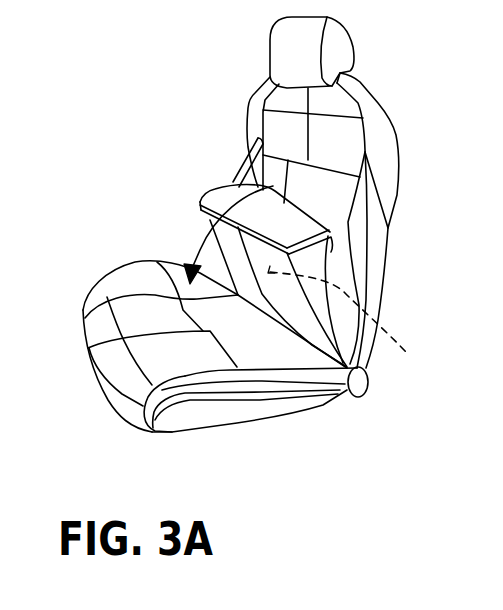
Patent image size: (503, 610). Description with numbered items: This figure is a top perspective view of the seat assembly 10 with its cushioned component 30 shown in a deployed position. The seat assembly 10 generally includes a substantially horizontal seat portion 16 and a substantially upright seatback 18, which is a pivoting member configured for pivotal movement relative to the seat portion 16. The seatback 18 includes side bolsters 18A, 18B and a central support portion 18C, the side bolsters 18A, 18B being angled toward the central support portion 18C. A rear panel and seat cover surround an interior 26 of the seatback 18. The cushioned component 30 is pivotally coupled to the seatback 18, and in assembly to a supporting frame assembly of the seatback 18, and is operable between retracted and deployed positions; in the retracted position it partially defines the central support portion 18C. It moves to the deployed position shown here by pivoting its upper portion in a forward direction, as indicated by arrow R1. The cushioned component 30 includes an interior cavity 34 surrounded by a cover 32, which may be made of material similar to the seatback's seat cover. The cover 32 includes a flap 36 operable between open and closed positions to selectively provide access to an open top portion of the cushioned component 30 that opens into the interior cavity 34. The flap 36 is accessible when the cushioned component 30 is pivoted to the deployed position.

The seat assembly 10 is at (257, 245).
The seat portion 16 is at (78, 351).
The seatback 18 is at (319, 213).
The side bolster 18A is at (247, 134).
The side bolster 18B is at (347, 245).
The central support portion 18C is at (326, 126).
The interior 26 is at (313, 185).
The cushioned component 30 is at (270, 283).
The cover 32 is at (290, 300).
The interior cavity 34 is at (354, 320).
The flap 36 is at (221, 185).
The arrow R1 is at (181, 235).